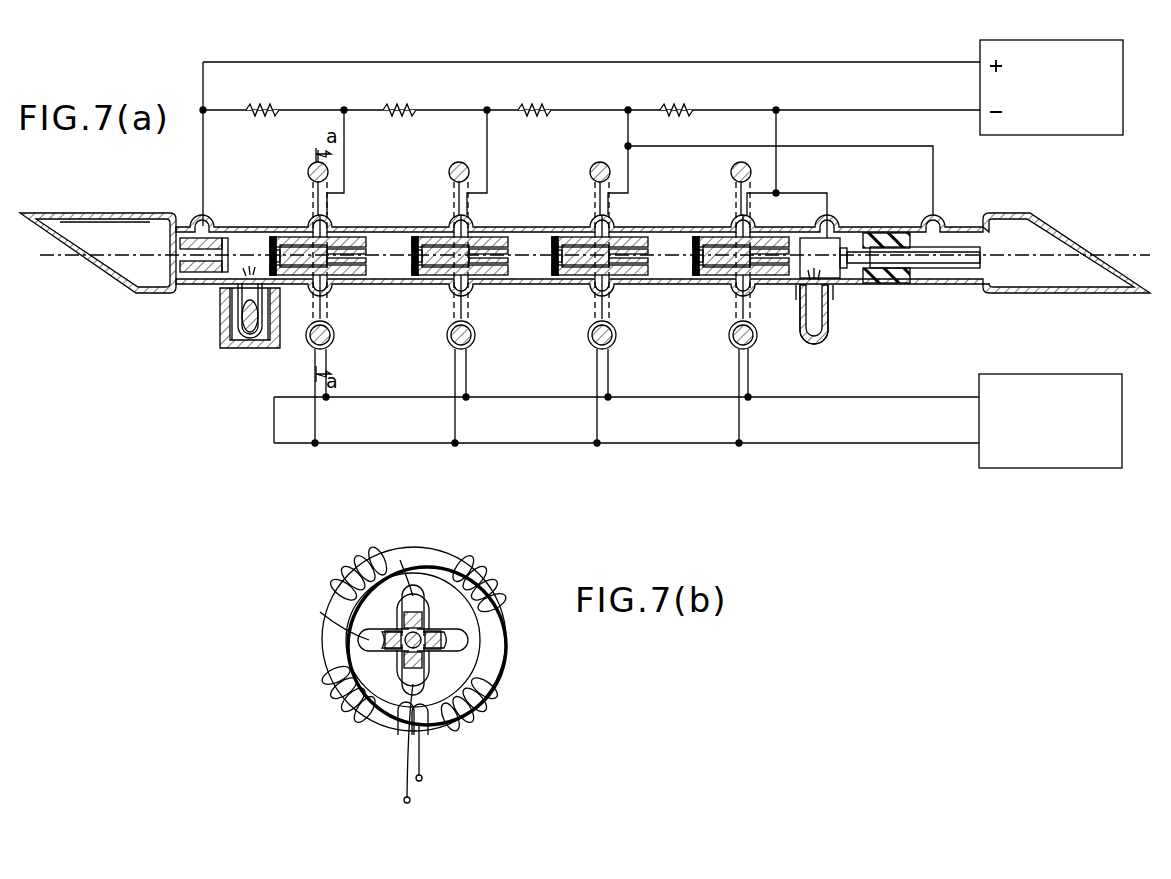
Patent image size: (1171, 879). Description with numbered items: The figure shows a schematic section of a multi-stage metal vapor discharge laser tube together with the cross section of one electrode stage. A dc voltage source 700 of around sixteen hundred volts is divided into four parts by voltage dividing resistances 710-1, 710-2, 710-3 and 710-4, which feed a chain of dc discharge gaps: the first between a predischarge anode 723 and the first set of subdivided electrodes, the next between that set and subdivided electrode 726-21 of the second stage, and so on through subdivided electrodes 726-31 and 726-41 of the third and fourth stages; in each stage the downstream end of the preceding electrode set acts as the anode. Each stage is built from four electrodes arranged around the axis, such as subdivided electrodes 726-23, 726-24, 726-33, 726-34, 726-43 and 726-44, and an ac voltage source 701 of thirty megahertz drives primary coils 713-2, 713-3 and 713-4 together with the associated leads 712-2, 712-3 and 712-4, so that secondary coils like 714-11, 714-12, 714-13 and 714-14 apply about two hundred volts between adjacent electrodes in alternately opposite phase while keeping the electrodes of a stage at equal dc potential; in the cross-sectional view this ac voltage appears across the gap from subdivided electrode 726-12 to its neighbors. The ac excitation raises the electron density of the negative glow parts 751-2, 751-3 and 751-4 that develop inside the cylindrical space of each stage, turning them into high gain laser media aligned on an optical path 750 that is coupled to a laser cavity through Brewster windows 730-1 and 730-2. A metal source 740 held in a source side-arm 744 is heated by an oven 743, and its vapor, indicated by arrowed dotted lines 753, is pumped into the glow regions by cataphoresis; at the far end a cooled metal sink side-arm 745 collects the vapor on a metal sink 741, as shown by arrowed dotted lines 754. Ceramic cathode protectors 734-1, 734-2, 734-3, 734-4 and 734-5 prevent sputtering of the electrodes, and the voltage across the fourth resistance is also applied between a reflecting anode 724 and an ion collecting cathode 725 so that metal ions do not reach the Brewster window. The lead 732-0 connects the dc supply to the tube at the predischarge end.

The dc voltage source 700 is at (1034, 40).
The ac voltage source 701 is at (1032, 374).
The voltage dividing resistance 710-1 is at (264, 110).
The voltage dividing resistance 710-2 is at (402, 110).
The voltage dividing resistance 710-3 is at (538, 110).
The voltage dividing resistance 710-4 is at (681, 110).
The lead wire 712-2 is at (468, 350).
The lead wire 712-3 is at (610, 350).
The lead wire 712-4 is at (750, 352).
The lead wire 713-2 is at (452, 350).
The lead wire 713-3 is at (594, 350).
The lead wire 713-4 is at (736, 350).
The secondary coil 714-11 is at (340, 582).
The secondary coil 714-12 is at (340, 700).
The secondary coil 714-13 is at (476, 712).
The secondary coil 714-14 is at (476, 566).
The predischarge anode 723 is at (205, 265).
The reflecting anode 724 is at (928, 245).
The ion collecting cathode 725 is at (830, 237).
The subdivided electrode 726-12 is at (320, 612).
The subdivided electrode 726-21 is at (500, 250).
The subdivided electrode 726-23 is at (462, 292).
The subdivided electrode 726-24 is at (485, 263).
The subdivided electrode 726-31 is at (644, 250).
The subdivided electrode 726-33 is at (603, 292).
The subdivided electrode 726-34 is at (625, 263).
The subdivided electrode 726-41 is at (784, 196).
The subdivided electrode 726-43 is at (750, 292).
The subdivided electrode 726-44 is at (768, 270).
The Brewster window 730-1 is at (108, 270).
The Brewster window 730-2 is at (1046, 226).
The connection wire 732-0 is at (204, 212).
The ceramic cathode protector 734-1 is at (272, 236).
The insulator 734-2 is at (413, 236).
The insulator 734-3 is at (553, 236).
The insulator 734-4 is at (694, 236).
The ceramic cathode protector 734-5 is at (890, 220).
The metal source 740 is at (226, 346).
The metal sink 741 is at (826, 338).
The oven 743 is at (266, 349).
The source side-arm 744 is at (241, 338).
The metal sink side-arm 745 is at (830, 318).
The optical path 750 is at (128, 250).
The negative glow part 751-2 is at (456, 240).
The negative glow part 751-3 is at (598, 240).
The negative glow part 751-4 is at (739, 240).
The arrowed dotted lines 753 is at (240, 318).
The arrowed dotted lines 754 is at (833, 292).